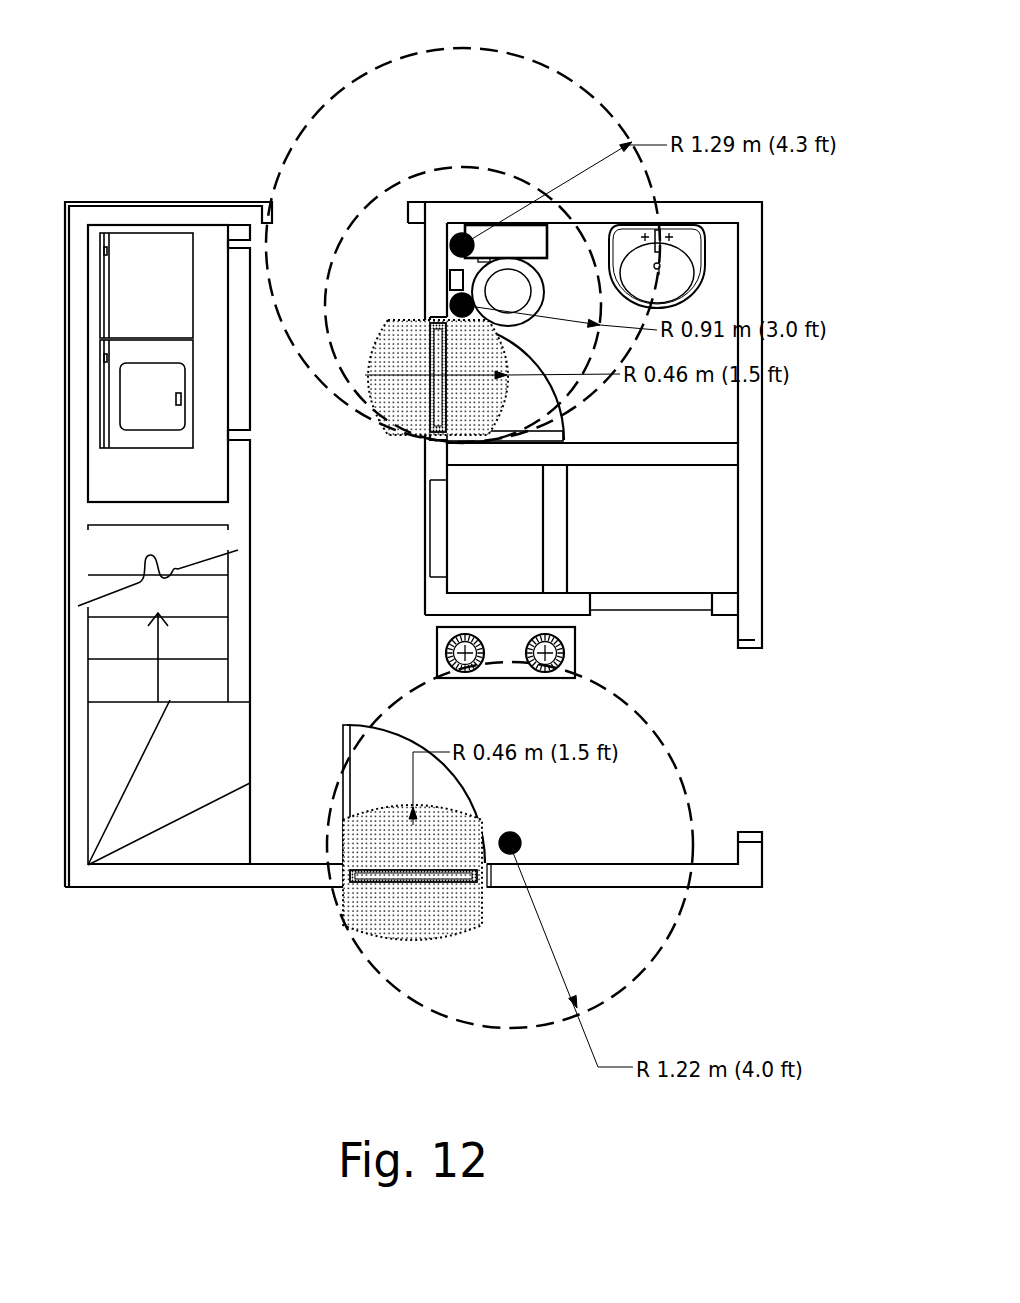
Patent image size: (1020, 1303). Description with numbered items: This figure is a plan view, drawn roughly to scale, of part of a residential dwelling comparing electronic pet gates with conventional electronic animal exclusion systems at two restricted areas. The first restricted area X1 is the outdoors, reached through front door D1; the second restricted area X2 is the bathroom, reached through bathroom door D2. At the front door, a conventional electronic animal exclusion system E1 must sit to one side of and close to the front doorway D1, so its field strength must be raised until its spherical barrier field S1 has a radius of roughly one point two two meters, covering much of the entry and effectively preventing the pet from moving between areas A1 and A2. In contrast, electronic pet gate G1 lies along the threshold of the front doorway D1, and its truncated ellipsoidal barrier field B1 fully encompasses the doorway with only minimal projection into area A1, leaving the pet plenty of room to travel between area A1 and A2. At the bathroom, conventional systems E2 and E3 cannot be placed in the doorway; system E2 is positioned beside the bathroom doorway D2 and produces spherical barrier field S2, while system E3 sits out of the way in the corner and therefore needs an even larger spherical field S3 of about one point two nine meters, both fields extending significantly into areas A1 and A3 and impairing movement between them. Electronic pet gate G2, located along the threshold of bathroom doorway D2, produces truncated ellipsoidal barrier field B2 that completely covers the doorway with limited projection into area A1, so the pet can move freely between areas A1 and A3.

The spherical barrier field S1 is at (680, 918).
The spherical barrier field S2 is at (520, 180).
The spherical barrier field S3 is at (367, 70).
The conventional electronic animal exclusion system E1 is at (515, 850).
The conventional electronic animal exclusion system E2 is at (462, 305).
The conventional electronic animal exclusion system E3 is at (298, 200).
The truncated ellipsoidal barrier field B1 is at (343, 904).
The truncated ellipsoidal barrier field B2 is at (365, 375).
The electronic pet gate G1 is at (343, 852).
The electronic pet gate G2 is at (381, 430).
The front door D1 is at (343, 744).
The bathroom door D2 is at (565, 433).
The area A1 is at (384, 664).
The area A2 is at (805, 724).
The area A3 is at (254, 122).
The first restricted area X1 is at (392, 1047).
The second restricted area X2 is at (692, 432).